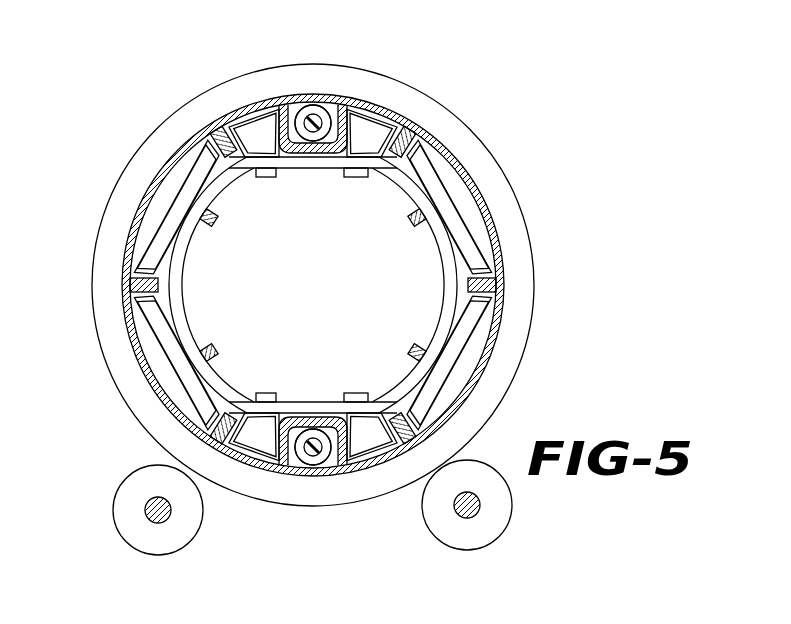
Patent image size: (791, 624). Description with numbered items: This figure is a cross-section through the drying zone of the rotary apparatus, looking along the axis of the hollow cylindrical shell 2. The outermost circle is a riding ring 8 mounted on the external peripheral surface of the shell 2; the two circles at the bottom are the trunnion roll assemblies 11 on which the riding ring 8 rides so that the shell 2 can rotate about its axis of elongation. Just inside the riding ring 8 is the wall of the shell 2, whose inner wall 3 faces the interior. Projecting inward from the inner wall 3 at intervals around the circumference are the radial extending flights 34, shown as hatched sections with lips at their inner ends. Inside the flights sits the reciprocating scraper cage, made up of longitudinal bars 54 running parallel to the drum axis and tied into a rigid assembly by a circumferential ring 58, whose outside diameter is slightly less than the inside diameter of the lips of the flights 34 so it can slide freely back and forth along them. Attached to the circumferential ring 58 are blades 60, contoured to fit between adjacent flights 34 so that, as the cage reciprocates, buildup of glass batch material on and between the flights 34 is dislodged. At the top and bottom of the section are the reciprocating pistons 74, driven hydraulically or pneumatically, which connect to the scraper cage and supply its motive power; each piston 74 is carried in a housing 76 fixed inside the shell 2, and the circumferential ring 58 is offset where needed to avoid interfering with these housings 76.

The hollow cylindrical shell 2 is at (500, 218).
The inner wall 3 is at (497, 260).
The riding ring 8 is at (433, 105).
The trunnion roll assembly 11 is at (438, 550).
The radial extending flight 34 is at (130, 275).
The longitudinal bar 54 is at (202, 352).
The circumferential ring 58 is at (216, 178).
The blade 60 is at (180, 178).
The reciprocating piston 74 is at (312, 106).
The housing 76 is at (333, 104).